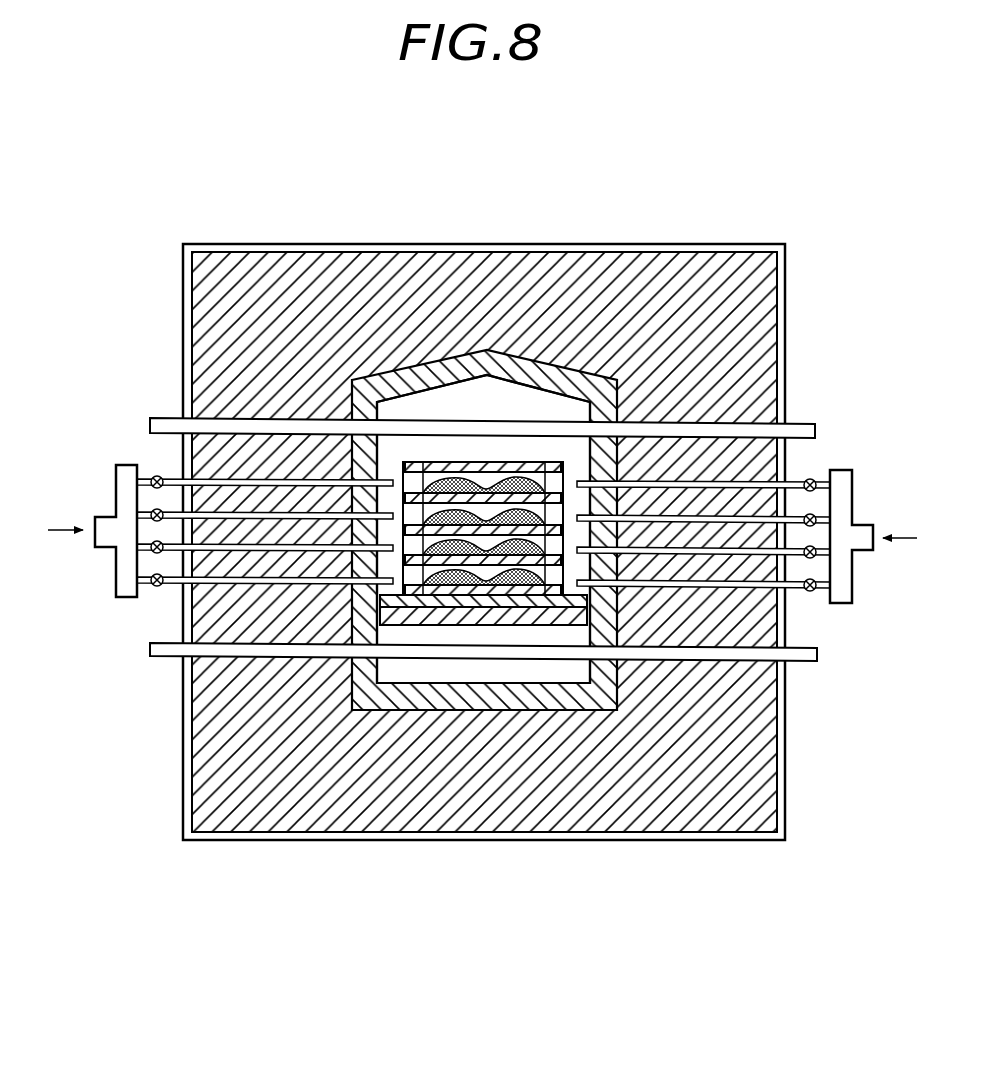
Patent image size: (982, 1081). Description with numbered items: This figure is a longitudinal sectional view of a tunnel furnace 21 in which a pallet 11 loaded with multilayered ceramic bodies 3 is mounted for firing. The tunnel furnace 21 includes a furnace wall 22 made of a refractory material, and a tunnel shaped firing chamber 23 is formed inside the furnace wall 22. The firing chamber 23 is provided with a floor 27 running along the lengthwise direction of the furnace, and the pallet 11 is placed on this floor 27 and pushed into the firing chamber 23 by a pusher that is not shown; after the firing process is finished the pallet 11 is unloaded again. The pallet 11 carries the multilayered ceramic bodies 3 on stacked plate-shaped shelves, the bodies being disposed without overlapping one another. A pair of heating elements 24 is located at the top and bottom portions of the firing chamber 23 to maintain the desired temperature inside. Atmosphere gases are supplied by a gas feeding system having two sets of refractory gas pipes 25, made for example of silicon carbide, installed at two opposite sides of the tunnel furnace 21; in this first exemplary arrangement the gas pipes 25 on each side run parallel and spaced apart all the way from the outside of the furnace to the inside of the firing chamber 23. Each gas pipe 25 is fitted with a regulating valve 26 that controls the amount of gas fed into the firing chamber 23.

The tunnel furnace 21 is at (681, 208).
The furnace wall 22 is at (370, 387).
The firing chamber 23 is at (437, 402).
The pallet 11 is at (487, 462).
The multilayered ceramic bodies 3 is at (512, 480).
The heating elements 24 is at (807, 430).
The gas pipes 25 is at (177, 578).
The regulating valve 26 is at (812, 592).
The floor 27 is at (480, 625).